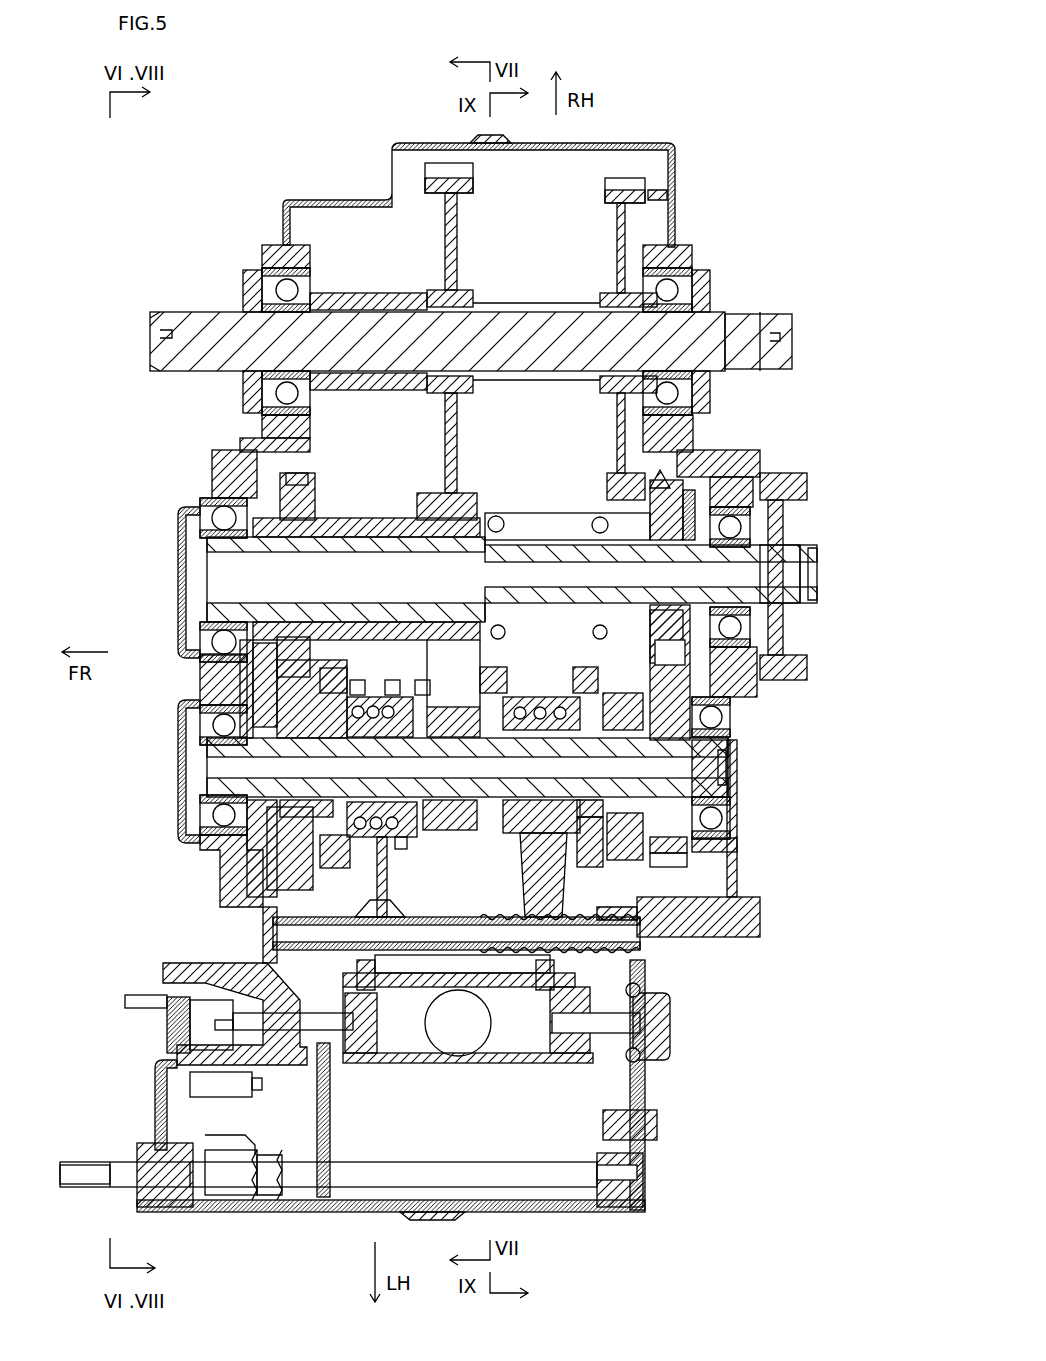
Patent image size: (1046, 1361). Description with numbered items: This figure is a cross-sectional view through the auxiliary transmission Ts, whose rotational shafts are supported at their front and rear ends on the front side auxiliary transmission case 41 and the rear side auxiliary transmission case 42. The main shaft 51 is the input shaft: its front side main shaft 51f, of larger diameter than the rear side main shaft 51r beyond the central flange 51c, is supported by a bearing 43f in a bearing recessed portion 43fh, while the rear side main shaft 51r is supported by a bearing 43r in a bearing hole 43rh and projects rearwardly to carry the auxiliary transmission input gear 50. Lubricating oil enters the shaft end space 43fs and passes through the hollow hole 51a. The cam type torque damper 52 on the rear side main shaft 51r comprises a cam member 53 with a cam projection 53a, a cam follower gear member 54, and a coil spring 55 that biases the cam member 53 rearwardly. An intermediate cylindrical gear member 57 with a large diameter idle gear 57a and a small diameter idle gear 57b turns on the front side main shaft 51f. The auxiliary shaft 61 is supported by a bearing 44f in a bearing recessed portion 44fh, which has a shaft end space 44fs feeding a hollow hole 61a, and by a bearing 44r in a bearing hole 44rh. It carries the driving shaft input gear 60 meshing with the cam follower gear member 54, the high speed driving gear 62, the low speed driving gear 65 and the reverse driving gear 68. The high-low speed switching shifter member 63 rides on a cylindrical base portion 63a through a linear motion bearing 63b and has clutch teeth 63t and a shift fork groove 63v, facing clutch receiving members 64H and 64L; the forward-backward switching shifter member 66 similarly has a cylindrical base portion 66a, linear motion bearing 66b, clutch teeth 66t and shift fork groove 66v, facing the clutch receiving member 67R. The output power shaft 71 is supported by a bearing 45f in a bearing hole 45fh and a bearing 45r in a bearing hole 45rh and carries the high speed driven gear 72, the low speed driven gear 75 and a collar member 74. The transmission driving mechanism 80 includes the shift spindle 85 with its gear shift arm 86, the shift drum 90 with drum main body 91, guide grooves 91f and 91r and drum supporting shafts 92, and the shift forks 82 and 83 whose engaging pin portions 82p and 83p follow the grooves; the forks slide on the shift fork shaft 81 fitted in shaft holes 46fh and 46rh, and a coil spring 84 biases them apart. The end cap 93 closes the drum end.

The auxiliary transmission Ts is at (273, 193).
The output power shaft 71 is at (538, 302).
The high speed driven gear 72 is at (605, 188).
The collar member 74 is at (372, 293).
The low speed driven gear 75 is at (480, 187).
The bearing 45f is at (260, 273).
The bearing hole 45fh is at (235, 300).
The bearing 45r is at (684, 283).
The bearing hole 45rh is at (719, 297).
The cam type torque damper 52 is at (692, 434).
The bearing 43f is at (215, 510).
The bearing recessed portion 43fh is at (195, 524).
The shaft end space 43fs is at (195, 573).
The bearing 43r is at (735, 496).
The bearing hole 43rh is at (768, 526).
The auxiliary transmission input gear 50 is at (788, 473).
The main shaft 51 is at (782, 602).
The hollow hole 51a is at (230, 601).
The central flange 51c is at (490, 514).
The front side main shaft 51f is at (383, 515).
The rear side main shaft 51r is at (524, 512).
The cam member 53 is at (603, 483).
The cam projection 53a is at (700, 496).
The cam follower gear member 54 is at (665, 478).
The coil spring 55 is at (548, 522).
The intermediate cylindrical gear member 57 is at (347, 518).
The large diameter idle gear 57a is at (305, 480).
The small diameter idle gear 57b is at (416, 493).
The driving shaft input gear 60 is at (682, 867).
The auxiliary shaft 61 is at (740, 762).
The hollow hole 61a is at (230, 773).
The high speed driving gear 62 is at (628, 860).
The high-low speed switching shifter member 63 is at (541, 727).
The cylindrical base portion 63a is at (507, 848).
The linear motion bearing 63b is at (565, 850).
The clutch teeth 63t is at (583, 687).
The shift fork groove 63v is at (548, 686).
The clutch receiving member 64L is at (482, 696).
The clutch receiving member 64H is at (607, 694).
The low speed driving gear 65 is at (460, 834).
The forward-backward switching shifter member 66 is at (400, 856).
The cylindrical base portion 66a is at (330, 858).
The linear motion bearing 66b is at (406, 840).
The clutch teeth 66t is at (412, 683).
The shift fork groove 66v is at (390, 680).
The clutch receiving member 67R is at (330, 868).
The reverse driving gear 68 is at (290, 870).
The bearing 44f is at (215, 735).
The bearing recessed portion 44fh is at (185, 807).
The shaft end space 44fs is at (200, 760).
The bearing 44r is at (730, 726).
The bearing hole 44rh is at (748, 820).
The front side auxiliary transmission case 41 is at (220, 864).
The rear side auxiliary transmission case 42 is at (737, 873).
The shaft hole 46fh is at (262, 943).
The shaft hole 46rh is at (671, 935).
The shift fork shaft 81 is at (647, 938).
The shift fork 82 is at (516, 907).
The engaging pin portion 82p is at (545, 978).
The shift fork 83 is at (398, 887).
The engaging pin portion 83p is at (370, 970).
The coil spring 84 is at (452, 965).
The transmission driving mechanism 80 is at (136, 1080).
The shift spindle 85 is at (413, 1212).
The gear shift arm 86 is at (335, 1090).
The shift drum 90 is at (483, 1078).
The drum main body 91 is at (400, 1063).
The guide groove 91f is at (416, 1046).
The guide groove 91r is at (525, 990).
The drum supporting shaft 92 is at (292, 1062).
The end cap 93 is at (663, 1060).